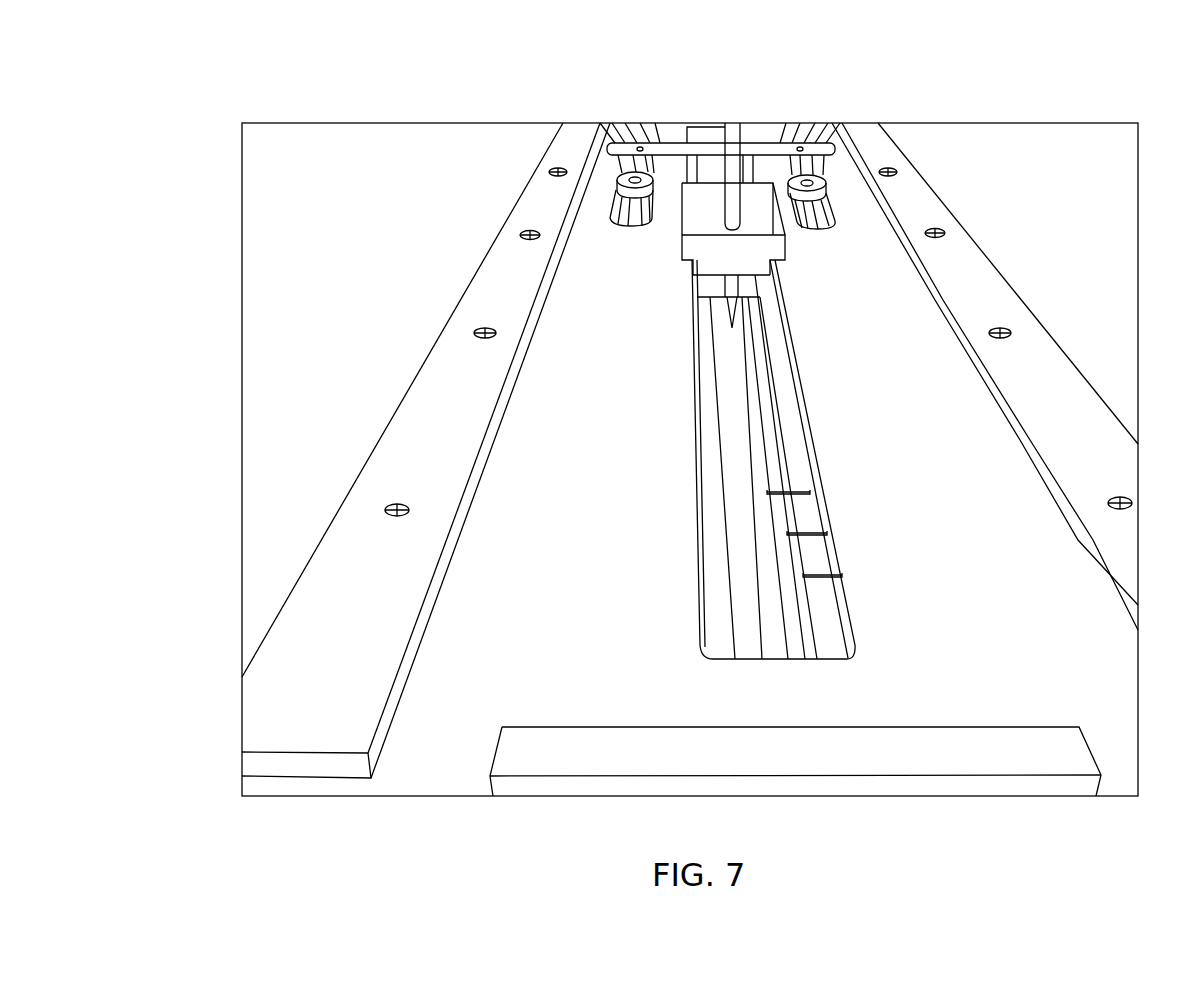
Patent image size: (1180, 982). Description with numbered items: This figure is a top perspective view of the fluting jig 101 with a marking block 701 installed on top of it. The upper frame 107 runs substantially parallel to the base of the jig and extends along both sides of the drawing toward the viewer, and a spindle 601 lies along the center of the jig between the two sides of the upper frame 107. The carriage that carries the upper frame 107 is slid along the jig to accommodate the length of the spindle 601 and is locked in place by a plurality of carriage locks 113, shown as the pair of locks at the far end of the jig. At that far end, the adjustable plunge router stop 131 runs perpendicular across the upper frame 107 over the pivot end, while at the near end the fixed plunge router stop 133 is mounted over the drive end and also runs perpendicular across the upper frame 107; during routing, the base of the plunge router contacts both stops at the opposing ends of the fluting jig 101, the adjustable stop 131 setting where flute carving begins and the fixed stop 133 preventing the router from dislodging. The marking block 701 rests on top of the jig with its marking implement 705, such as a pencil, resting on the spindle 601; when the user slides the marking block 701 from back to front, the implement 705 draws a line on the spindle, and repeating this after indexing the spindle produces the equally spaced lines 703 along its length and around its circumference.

The fluting jig 101 is at (238, 108).
The upper frame 107 is at (490, 278).
The carriage locks 113 is at (620, 172).
The adjustable plunge router stop 131 is at (765, 125).
The fixed plunge router stop 133 is at (985, 748).
The spindle 601 is at (740, 548).
The marking block 701 is at (775, 421).
The equally spaced lines 703 is at (810, 492).
The marking implement 705 is at (742, 217).